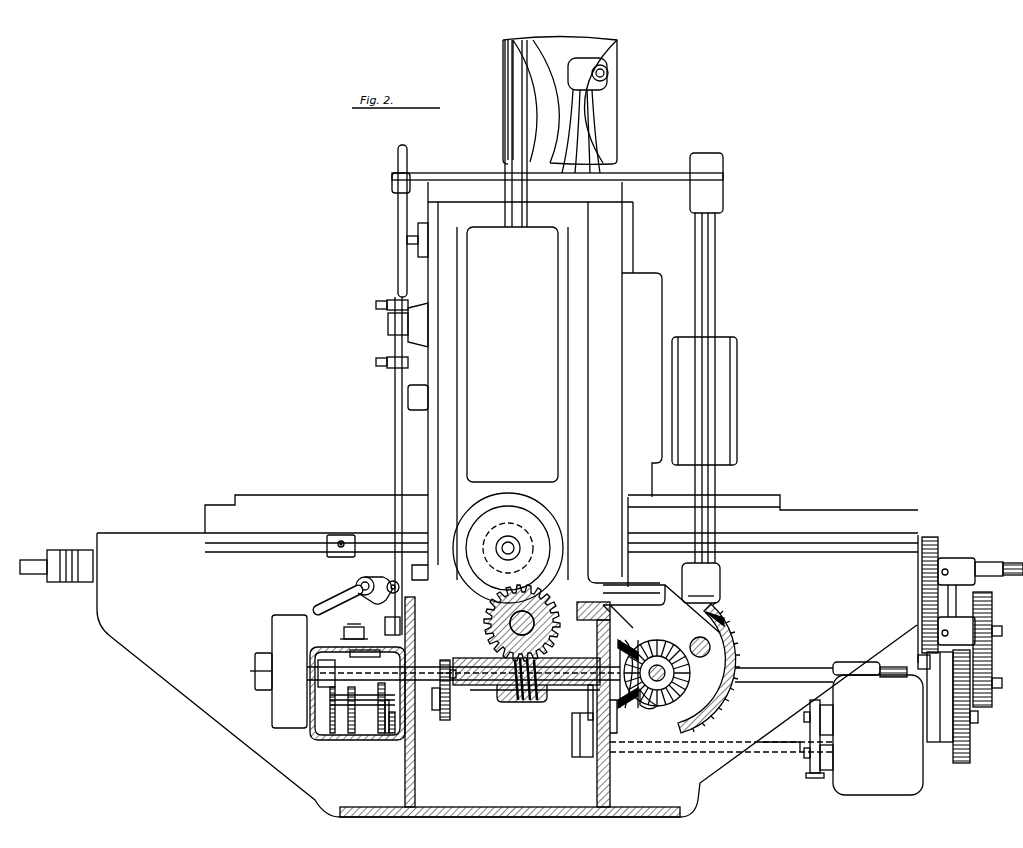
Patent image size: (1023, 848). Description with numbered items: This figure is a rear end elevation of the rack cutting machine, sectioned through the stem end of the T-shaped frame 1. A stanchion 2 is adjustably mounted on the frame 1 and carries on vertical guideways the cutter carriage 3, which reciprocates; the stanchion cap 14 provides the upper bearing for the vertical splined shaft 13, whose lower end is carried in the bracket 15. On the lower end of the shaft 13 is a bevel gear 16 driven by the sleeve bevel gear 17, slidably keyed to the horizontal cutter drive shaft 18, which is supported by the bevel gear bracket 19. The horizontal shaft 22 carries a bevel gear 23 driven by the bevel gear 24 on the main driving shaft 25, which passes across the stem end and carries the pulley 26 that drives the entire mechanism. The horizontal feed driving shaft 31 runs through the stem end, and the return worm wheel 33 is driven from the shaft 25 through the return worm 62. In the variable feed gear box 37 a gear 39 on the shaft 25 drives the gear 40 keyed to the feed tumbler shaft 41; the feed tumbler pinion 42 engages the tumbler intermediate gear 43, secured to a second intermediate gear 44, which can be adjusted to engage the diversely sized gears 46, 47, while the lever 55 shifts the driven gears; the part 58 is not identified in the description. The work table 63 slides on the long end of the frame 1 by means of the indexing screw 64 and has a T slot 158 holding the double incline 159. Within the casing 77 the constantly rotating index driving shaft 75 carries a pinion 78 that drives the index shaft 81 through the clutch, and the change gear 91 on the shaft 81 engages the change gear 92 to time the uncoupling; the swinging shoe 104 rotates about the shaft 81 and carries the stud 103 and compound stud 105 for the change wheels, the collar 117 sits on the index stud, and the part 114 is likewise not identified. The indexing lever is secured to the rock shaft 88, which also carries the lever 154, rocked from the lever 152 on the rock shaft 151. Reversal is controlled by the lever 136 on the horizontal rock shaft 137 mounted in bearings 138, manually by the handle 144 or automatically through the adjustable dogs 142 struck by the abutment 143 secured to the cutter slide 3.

The frame 1 is at (704, 772).
The stanchion 2 is at (622, 249).
The cutter carriage 3 is at (662, 300).
The vertical splined shaft 13 is at (716, 314).
The stanchion cap 14 is at (486, 178).
The bracket 15 is at (721, 575).
The bevel gear 16 is at (728, 620).
The sleeve bevel gear 17 is at (737, 653).
The horizontal cutter drive shaft 18 is at (710, 644).
The bevel gear bracket 19 is at (690, 698).
The horizontal shaft 22 is at (657, 690).
The bevel gear 23 is at (672, 708).
The bevel gear 24 is at (628, 710).
The main driving shaft 25 is at (428, 660).
The pulley 26 is at (272, 708).
The horizontal feed driving shaft 31 is at (557, 626).
The return worm wheel 33 is at (552, 605).
The variable feed gear box 37 is at (323, 650).
The gear 39 is at (447, 660).
The second gear 40 is at (446, 721).
The feed tumbler shaft 41 is at (437, 700).
The feed tumbler pinion 42 is at (378, 720).
The tumbler intermediate gear 43 is at (386, 730).
The second intermediate gear 44 is at (392, 734).
The intermediate gear 46 is at (330, 725).
The intermediate gear 47 is at (348, 730).
The lever 55 is at (352, 657).
The cap 58 is at (344, 635).
The return worm 62 is at (522, 702).
The work table 63 is at (325, 496).
The indexing screw 64 is at (47, 558).
The index driving shaft 75 is at (780, 676).
The casing 77 is at (858, 668).
The pinion 78 is at (893, 667).
The index shaft 81 is at (978, 717).
The rock shaft 88 is at (790, 752).
The change gear 91 is at (810, 706).
The second change gear 92 is at (814, 778).
The stud 103 is at (1002, 631).
The swinging shoe 104 is at (937, 742).
The compound stud 105 is at (1002, 683).
The bearing block 114 is at (960, 558).
The collar 117 is at (950, 640).
The lever 136 is at (390, 581).
The horizontal rock shaft 137 is at (357, 585).
The bearings 138 is at (376, 605).
The adjustable dogs 142 is at (387, 305).
The abutment 143 is at (388, 325).
The handle 144 is at (324, 603).
The rock shaft 151 is at (482, 691).
The lever 152 is at (588, 703).
The lever 154 is at (580, 757).
The T slot 158 is at (272, 547).
The double incline 159 is at (340, 557).